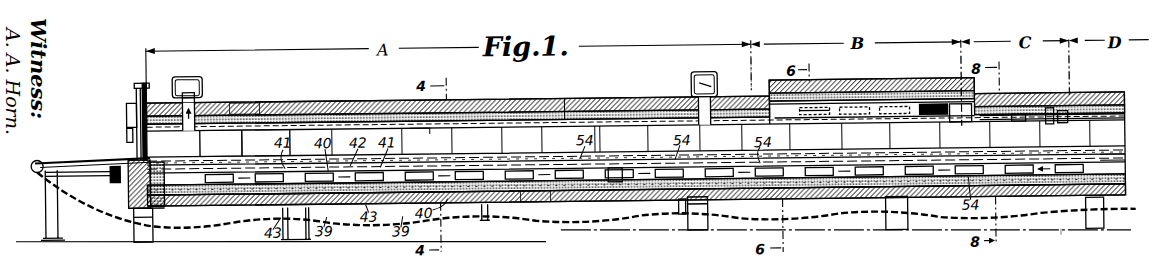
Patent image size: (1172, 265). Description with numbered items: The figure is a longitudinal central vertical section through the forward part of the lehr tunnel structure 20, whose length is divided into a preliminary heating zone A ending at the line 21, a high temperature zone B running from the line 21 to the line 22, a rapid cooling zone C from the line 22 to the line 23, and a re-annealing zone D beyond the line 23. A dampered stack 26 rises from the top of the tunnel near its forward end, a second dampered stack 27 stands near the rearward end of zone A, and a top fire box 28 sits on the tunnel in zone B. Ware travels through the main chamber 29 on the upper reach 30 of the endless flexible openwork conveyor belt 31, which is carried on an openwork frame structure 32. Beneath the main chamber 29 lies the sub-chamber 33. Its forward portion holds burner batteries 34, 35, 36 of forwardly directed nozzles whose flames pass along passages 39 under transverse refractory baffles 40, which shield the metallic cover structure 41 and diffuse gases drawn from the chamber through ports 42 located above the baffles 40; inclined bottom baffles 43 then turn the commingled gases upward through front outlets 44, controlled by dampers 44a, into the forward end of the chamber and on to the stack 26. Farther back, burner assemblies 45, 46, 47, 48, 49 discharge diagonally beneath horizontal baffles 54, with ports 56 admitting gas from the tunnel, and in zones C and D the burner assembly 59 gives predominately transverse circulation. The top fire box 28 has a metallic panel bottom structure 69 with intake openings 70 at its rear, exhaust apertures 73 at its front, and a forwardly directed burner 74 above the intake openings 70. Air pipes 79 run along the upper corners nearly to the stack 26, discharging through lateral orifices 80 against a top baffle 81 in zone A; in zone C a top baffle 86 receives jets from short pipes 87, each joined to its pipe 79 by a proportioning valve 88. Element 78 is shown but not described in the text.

The lehr tunnel structure 20 is at (498, 97).
The zone boundary line 21 is at (752, 82).
The zone boundary line 22 is at (962, 78).
The zone boundary line 23 is at (1078, 88).
The dampered stack 26 is at (203, 82).
The second dampered stack 27 is at (696, 86).
The top fire box 28 is at (853, 96).
The main chamber 29 is at (570, 108).
The upper reach of conveyor belt 30 is at (528, 156).
The endless flexible openwork conveyor belt 31 is at (598, 224).
The openwork frame structure 32 is at (600, 150).
The sub-chamber 33 is at (535, 196).
The burner battery 34 is at (243, 225).
The burner battery 35 is at (348, 222).
The burner battery 36 is at (445, 207).
The flame passages 39 is at (218, 202).
The transverse refractory baffles 40 is at (232, 170).
The metallic cover structure 41 is at (205, 158).
The ports 42 is at (248, 165).
The bottom baffles 43 is at (175, 202).
The front outlets 44 is at (128, 186).
The dampers 44a is at (140, 152).
The burner assembly 45 is at (520, 215).
The burner assembly 46 is at (600, 184).
The burner assembly 47 is at (716, 198).
The burner assembly 48 is at (815, 198).
The burner assembly 49 is at (1016, 181).
The horizontal baffles 54 is at (473, 165).
The ports 56 is at (613, 168).
The burner assembly 59 is at (1110, 164).
The metallic panel bottom structure 69 is at (860, 118).
The intake openings 70 is at (958, 127).
The exhaust apertures 73 is at (808, 116).
The top fire box burner 74 is at (935, 119).
The discharge conveyor 78 is at (1061, 247).
The air pipes 79 is at (900, 118).
The lateral orifices 80 is at (250, 99).
The top baffle 81 is at (418, 130).
The top baffle 86 is at (1020, 126).
The short pipes 87 is at (1050, 113).
The proportioning valve 88 is at (1062, 128).